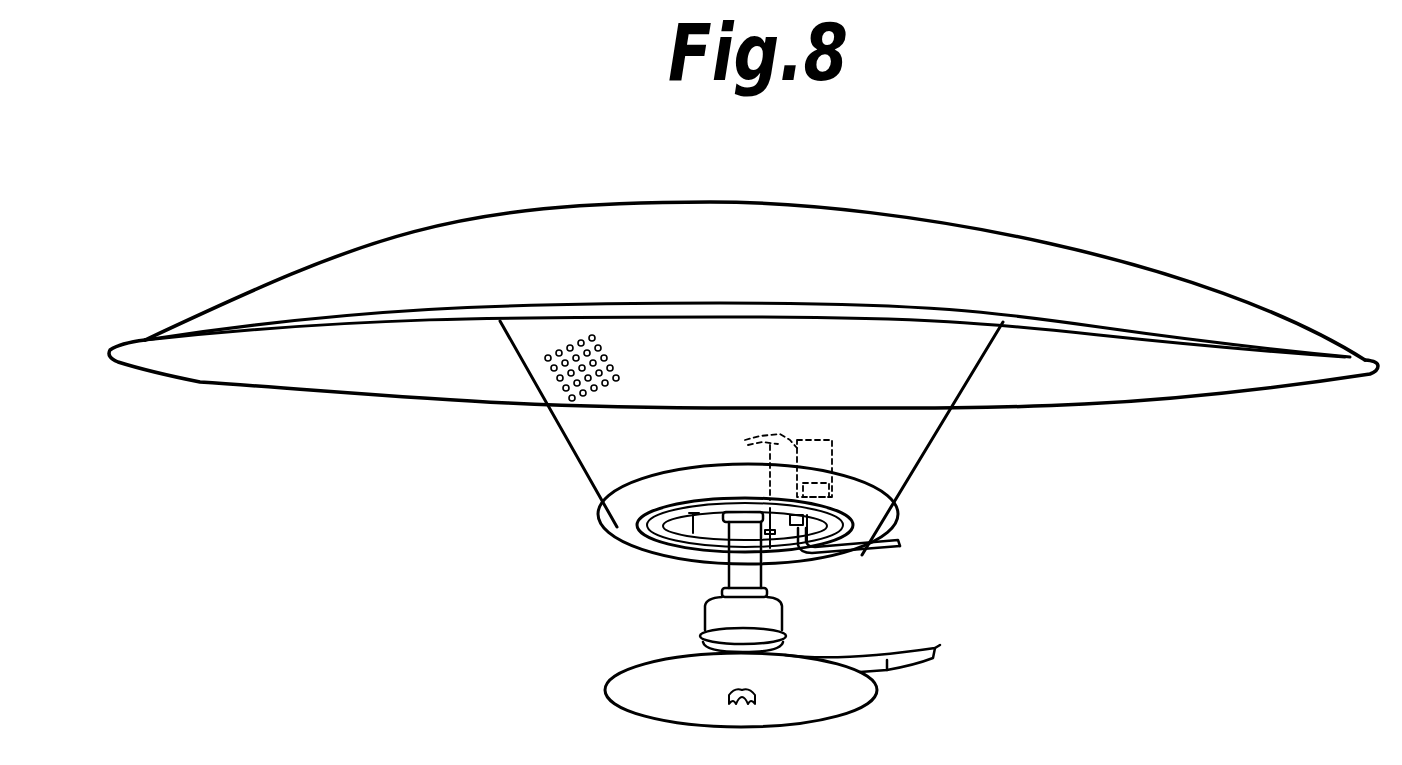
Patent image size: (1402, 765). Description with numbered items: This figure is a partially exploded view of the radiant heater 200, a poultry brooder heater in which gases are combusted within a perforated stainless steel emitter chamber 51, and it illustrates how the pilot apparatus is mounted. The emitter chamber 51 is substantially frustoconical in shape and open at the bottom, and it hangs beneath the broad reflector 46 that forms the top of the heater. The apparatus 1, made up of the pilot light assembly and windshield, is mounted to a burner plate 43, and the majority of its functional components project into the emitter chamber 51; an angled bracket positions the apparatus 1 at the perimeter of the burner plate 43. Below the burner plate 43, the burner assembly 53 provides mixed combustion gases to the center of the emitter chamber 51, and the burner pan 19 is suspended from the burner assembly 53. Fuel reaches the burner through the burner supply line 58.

The radiant heater 200 is at (487, 213).
The reflector 46 is at (955, 257).
The perforated stainless steel emitter chamber 51 is at (677, 403).
The apparatus 1 is at (828, 455).
The burner plate 43 is at (717, 518).
The burner assembly 53 is at (703, 600).
The burner supply line 58 is at (940, 646).
The burner pan 19 is at (862, 677).